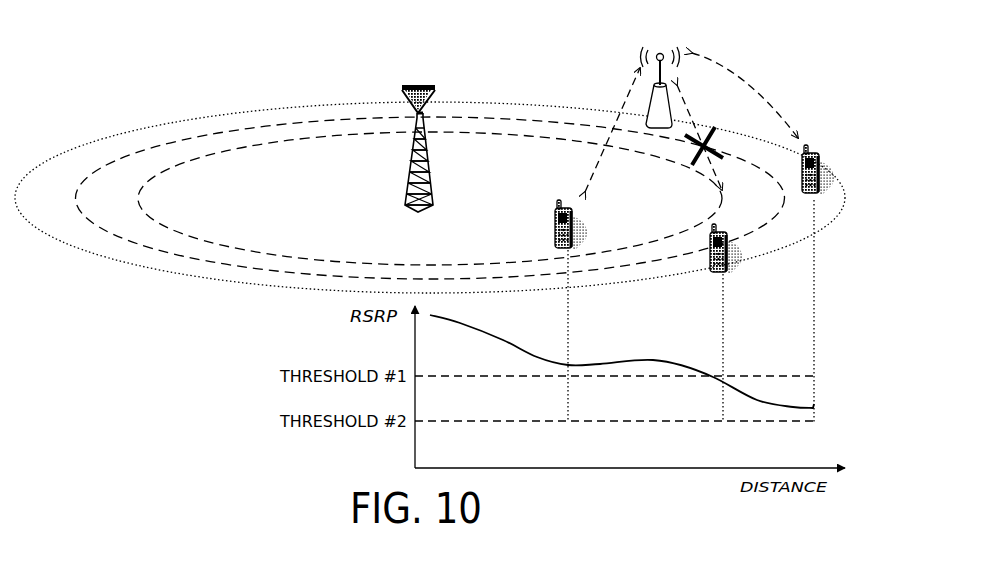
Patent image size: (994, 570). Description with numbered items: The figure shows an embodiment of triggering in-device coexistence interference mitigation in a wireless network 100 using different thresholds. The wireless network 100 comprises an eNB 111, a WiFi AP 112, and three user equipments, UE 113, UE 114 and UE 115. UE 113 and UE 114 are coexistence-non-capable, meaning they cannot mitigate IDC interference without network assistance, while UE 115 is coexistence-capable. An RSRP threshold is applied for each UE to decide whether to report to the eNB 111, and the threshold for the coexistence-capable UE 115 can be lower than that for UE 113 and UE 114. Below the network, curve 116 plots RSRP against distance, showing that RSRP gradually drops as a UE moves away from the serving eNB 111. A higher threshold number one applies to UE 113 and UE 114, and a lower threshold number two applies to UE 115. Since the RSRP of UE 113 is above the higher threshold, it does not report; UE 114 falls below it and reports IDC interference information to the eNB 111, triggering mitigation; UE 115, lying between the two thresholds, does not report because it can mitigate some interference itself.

The wireless network 100 is at (136, 45).
The eNB 111 is at (424, 84).
The WiFi AP 112 is at (660, 79).
The UE 113 is at (569, 205).
The UE 114 is at (727, 231).
The UE 115 is at (809, 152).
The curve 116 is at (658, 359).